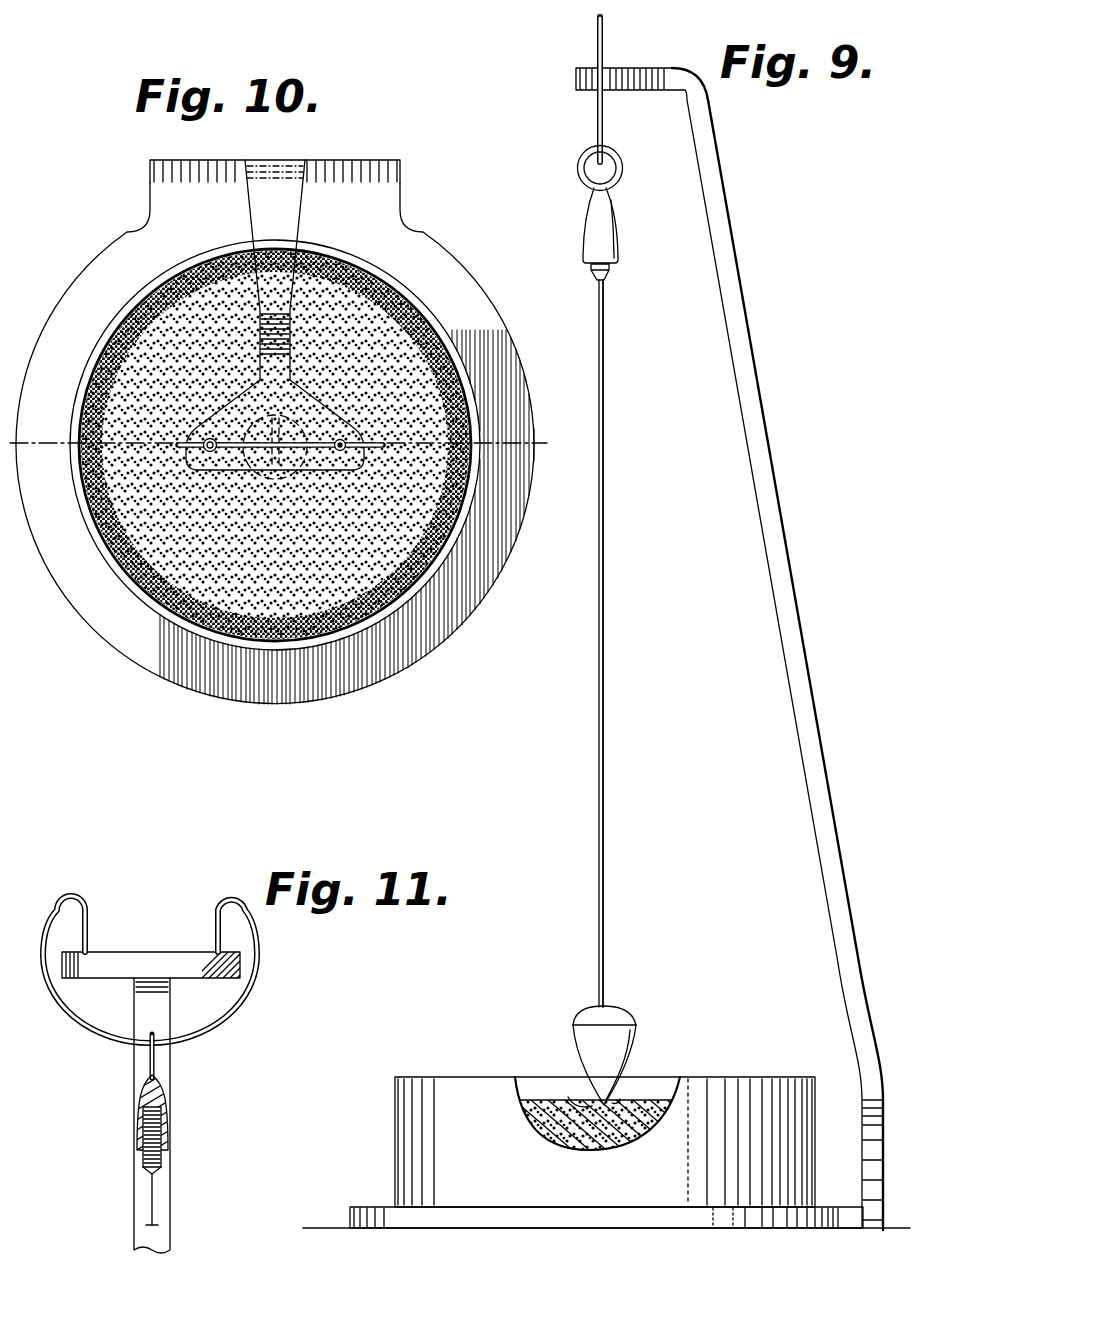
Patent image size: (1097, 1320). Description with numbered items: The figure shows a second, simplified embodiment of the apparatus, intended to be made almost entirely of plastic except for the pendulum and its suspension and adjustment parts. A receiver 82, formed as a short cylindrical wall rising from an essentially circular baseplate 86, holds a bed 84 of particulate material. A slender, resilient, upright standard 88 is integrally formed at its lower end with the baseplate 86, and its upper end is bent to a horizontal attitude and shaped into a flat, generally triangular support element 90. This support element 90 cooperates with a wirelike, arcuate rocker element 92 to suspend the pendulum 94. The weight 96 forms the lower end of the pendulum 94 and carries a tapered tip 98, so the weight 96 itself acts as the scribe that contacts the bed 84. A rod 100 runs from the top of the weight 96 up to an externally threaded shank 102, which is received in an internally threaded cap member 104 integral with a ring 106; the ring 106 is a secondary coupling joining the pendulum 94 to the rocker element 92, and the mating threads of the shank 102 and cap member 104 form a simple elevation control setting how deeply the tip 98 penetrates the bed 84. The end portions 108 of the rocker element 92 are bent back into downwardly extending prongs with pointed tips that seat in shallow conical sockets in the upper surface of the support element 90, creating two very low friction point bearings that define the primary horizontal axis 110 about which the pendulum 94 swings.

In FIG. 9, the receiver 82 is at (394, 1091).
In FIG. 10, the receiver 82 is at (138, 608).
In FIG. 9, the bed 84 is at (648, 1098).
In FIG. 10, the bed 84 is at (128, 568).
In FIG. 9, the baseplate 86 is at (384, 1204).
In FIG. 10, the baseplate 86 is at (110, 241).
In FIG. 9, the standard 88 is at (778, 492).
In FIG. 10, the standard 88 is at (303, 206).
In FIG. 11, the standard 88 is at (133, 1212).
In FIG. 9, the support element 90 is at (616, 70).
In FIG. 10, the support element 90 is at (238, 408).
In FIG. 11, the support element 90 is at (142, 950).
In FIG. 9, the rocker element 92 is at (596, 122).
In FIG. 10, the rocker element 92 is at (173, 447).
In FIG. 11, the rocker element 92 is at (248, 998).
In FIG. 9, the pendulum 94 is at (607, 636).
In FIG. 9, the weight 96 is at (578, 1010).
In FIG. 10, the weight 96 is at (262, 474).
In FIG. 9, the tapered tip 98 is at (568, 1097).
In FIG. 9, the rod 100 is at (606, 715).
In FIG. 11, the rod 100 is at (158, 1209).
In FIG. 9, the externally threaded shank 102 is at (610, 276).
In FIG. 11, the externally threaded shank 102 is at (163, 1159).
In FIG. 9, the cap member 104 is at (617, 229).
In FIG. 11, the cap member 104 is at (138, 1094).
In FIG. 9, the ring 106 is at (616, 162).
In FIG. 10, the ring 106 is at (296, 406).
In FIG. 11, the ring 106 is at (148, 1063).
In FIG. 10, the end portions 108 is at (340, 440).
In FIG. 11, the end portions 108 is at (98, 898).
In FIG. 10, the primary horizontal axis 110 is at (50, 428).